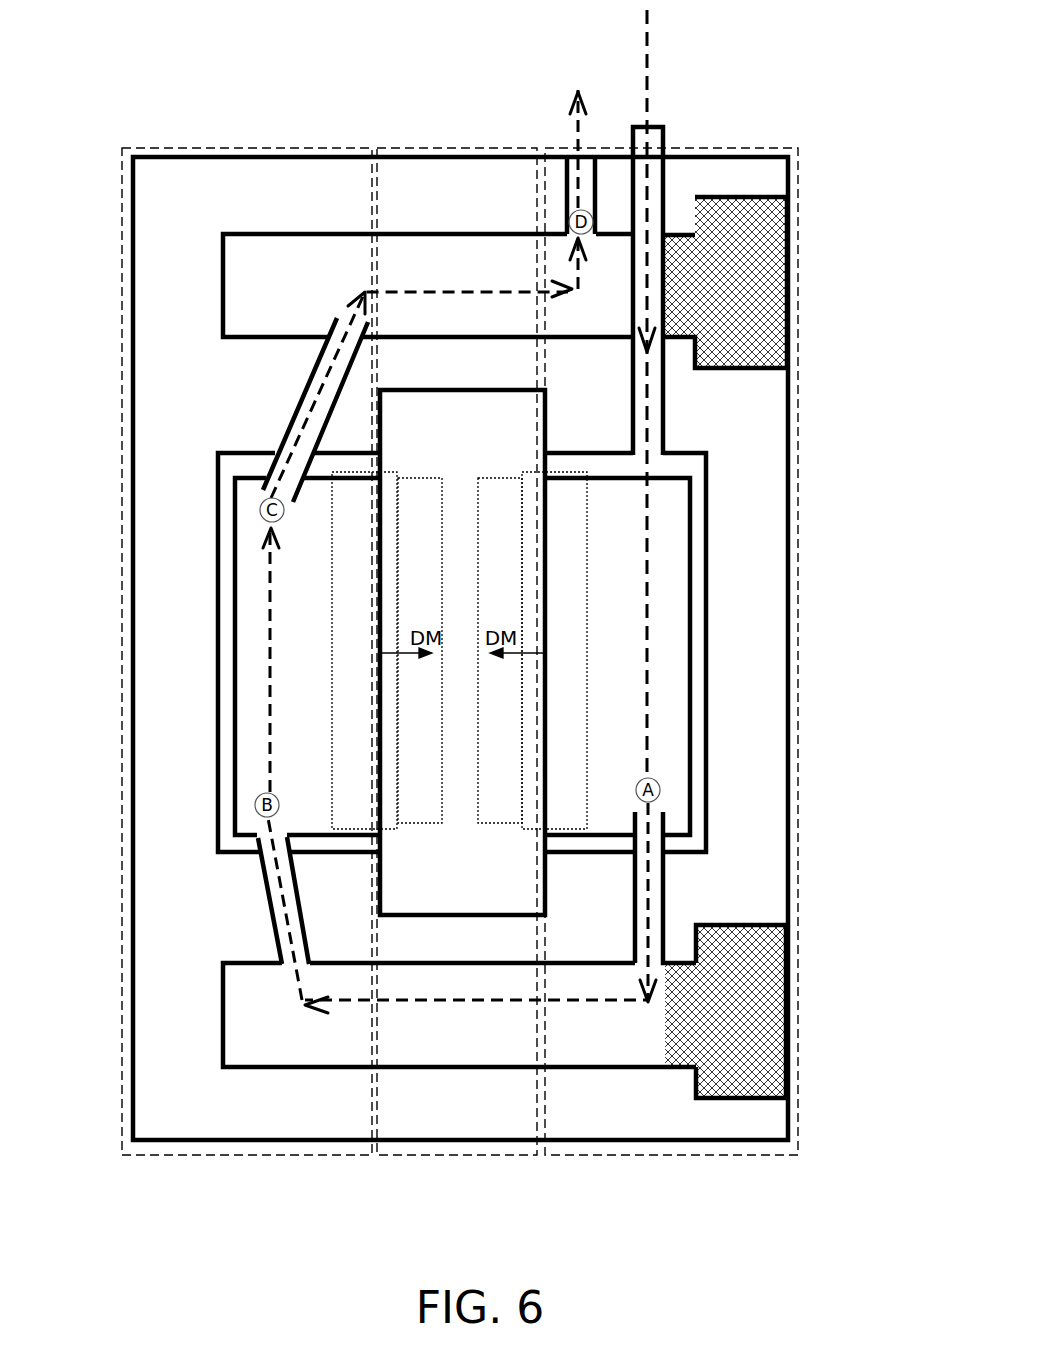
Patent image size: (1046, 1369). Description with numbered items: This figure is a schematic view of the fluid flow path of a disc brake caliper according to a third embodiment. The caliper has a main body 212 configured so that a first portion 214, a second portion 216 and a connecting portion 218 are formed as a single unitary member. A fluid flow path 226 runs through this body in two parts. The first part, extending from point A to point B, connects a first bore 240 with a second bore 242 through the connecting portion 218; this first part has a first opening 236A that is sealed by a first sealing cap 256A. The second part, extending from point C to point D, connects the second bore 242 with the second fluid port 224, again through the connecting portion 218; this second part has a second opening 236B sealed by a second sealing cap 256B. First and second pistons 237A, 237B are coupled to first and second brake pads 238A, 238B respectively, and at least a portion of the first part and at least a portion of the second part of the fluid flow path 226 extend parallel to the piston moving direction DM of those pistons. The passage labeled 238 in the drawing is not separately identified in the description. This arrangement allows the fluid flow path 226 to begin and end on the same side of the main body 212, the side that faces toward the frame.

The main body 212 is at (305, 62).
The first portion 214 is at (798, 174).
The second portion 216 is at (278, 147).
The connecting portion 218 is at (492, 146).
The second fluid port 224 is at (568, 157).
The fluid flow path 226 is at (647, 73).
The first opening 236A is at (752, 1088).
The second opening 236B is at (750, 362).
The first piston 237A is at (587, 540).
The second piston 237B is at (333, 620).
The supply channel 238 is at (666, 134).
The first brake pad 238A is at (478, 610).
The second brake pad 238B is at (398, 610).
The first bore 240 is at (692, 617).
The second bore 242 is at (232, 607).
The first sealing cap 256A is at (733, 1028).
The second sealing cap 256B is at (740, 290).